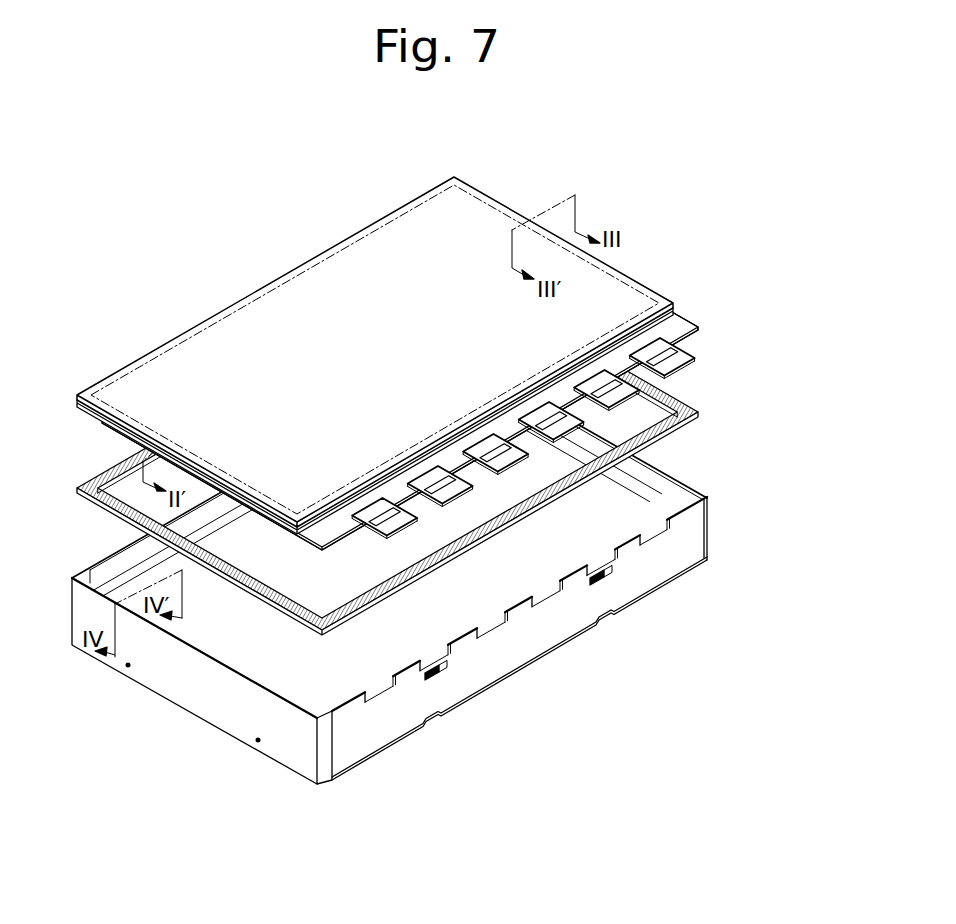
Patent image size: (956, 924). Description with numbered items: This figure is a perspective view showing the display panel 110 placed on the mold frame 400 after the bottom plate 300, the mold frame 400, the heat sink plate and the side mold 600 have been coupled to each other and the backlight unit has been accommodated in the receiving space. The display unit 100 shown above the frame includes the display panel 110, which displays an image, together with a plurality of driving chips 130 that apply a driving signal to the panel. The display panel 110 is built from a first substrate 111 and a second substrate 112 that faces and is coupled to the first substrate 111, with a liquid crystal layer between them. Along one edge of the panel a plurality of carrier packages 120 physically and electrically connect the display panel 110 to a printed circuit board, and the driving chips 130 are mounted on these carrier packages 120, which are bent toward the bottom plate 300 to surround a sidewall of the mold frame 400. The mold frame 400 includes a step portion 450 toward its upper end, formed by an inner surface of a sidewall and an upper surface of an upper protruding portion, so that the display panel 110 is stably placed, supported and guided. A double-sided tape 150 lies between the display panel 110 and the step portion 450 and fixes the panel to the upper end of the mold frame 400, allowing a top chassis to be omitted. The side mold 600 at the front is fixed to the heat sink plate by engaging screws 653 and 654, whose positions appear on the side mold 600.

The display unit 100 is at (464, 363).
The display panel 110 is at (439, 355).
The first substrate 111 is at (677, 322).
The second substrate 112 is at (640, 298).
The carrier packages 120 is at (683, 348).
The driving chip 130 is at (673, 332).
The double-sided tape 150 is at (673, 400).
The bottom plate 300 is at (475, 695).
The mold frame 400 is at (513, 652).
The step portion 450 is at (672, 498).
The side mold 600 is at (195, 693).
The engaging screw 653 is at (258, 740).
The engaging screw 654 is at (128, 665).